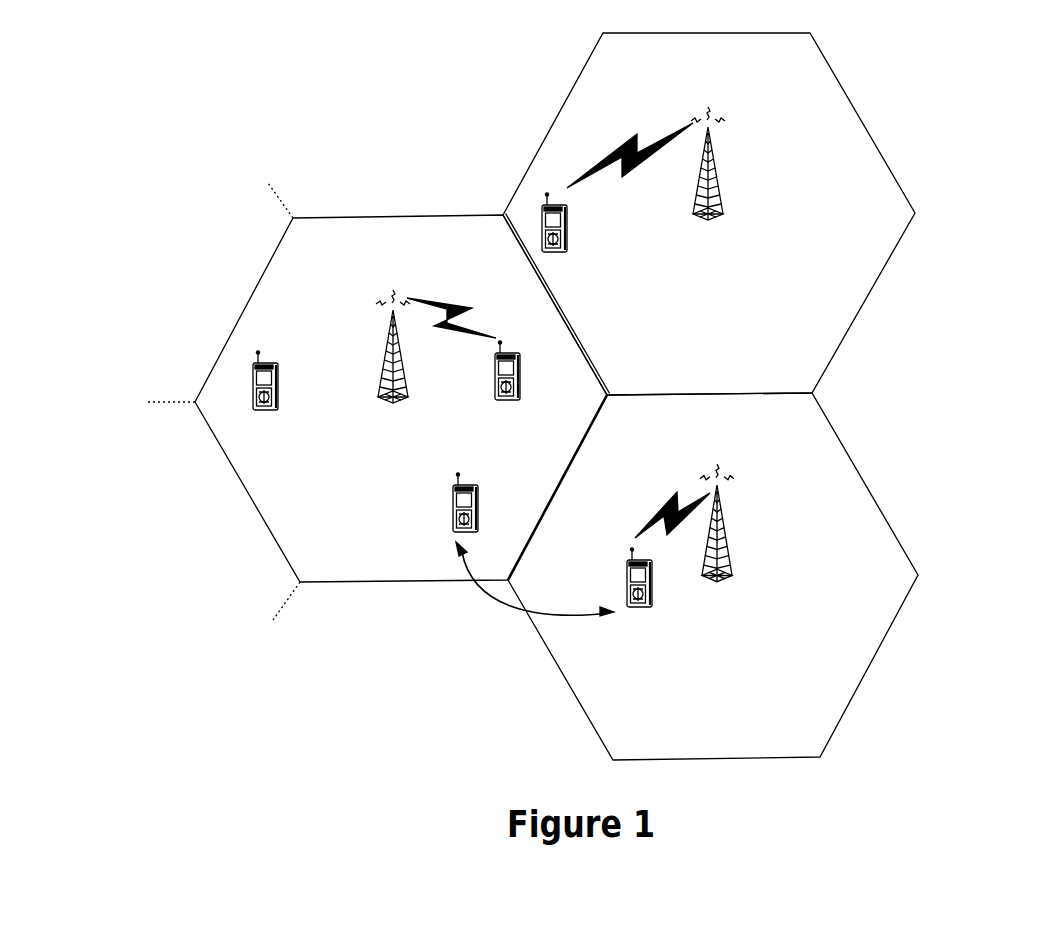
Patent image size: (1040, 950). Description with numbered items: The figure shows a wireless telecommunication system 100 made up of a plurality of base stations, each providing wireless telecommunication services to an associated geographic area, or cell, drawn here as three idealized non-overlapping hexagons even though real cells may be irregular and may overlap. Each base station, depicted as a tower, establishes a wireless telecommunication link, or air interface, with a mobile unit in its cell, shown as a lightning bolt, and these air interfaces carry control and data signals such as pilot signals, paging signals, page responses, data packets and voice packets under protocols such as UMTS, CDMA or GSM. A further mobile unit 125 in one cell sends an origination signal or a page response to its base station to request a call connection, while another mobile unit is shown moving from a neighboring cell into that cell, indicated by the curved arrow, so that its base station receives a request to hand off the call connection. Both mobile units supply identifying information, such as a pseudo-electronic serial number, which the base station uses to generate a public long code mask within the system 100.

The wireless telecommunication system 100 is at (952, 119).
The mobile unit 125 is at (265, 410).